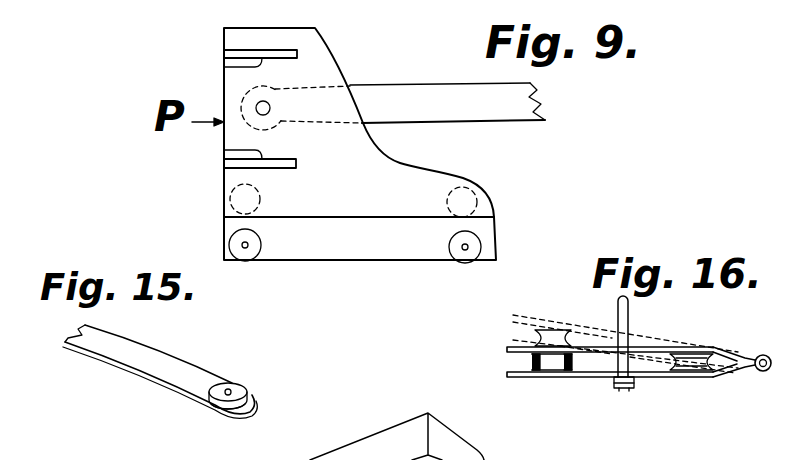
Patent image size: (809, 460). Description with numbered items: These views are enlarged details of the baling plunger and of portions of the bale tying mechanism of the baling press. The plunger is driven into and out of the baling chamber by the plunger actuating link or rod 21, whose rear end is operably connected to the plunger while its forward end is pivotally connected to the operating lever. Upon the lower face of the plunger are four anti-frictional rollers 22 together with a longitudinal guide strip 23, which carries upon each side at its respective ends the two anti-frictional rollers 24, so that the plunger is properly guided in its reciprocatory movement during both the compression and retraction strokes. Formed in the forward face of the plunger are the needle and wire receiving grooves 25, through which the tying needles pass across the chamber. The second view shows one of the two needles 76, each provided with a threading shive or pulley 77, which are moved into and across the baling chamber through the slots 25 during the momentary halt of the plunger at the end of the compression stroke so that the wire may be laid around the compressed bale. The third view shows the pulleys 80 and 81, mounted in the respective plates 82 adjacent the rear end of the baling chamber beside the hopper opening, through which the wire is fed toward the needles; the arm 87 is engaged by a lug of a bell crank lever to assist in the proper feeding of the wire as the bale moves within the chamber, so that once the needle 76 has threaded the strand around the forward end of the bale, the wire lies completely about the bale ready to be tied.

In FIG. 9, the plunger actuating link or rod 21 is at (490, 110).
In FIG. 9, the anti-frictional rollers 22 is at (237, 203).
In FIG. 9, the longitudinal guide strip 23 is at (385, 261).
In FIG. 9, the anti-frictional rollers 24 is at (247, 249).
In FIG. 9, the needle and wire receiving grooves 25 is at (228, 53).
In FIG. 15, the needles 76 is at (152, 376).
In FIG. 15, the threading shives or pulleys 77 is at (245, 388).
In FIG. 16, the pulley 80 is at (690, 368).
In FIG. 16, the pulley 81 is at (553, 362).
In FIG. 16, the plates 82 is at (643, 377).
In FIG. 16, the arm 87 is at (617, 313).